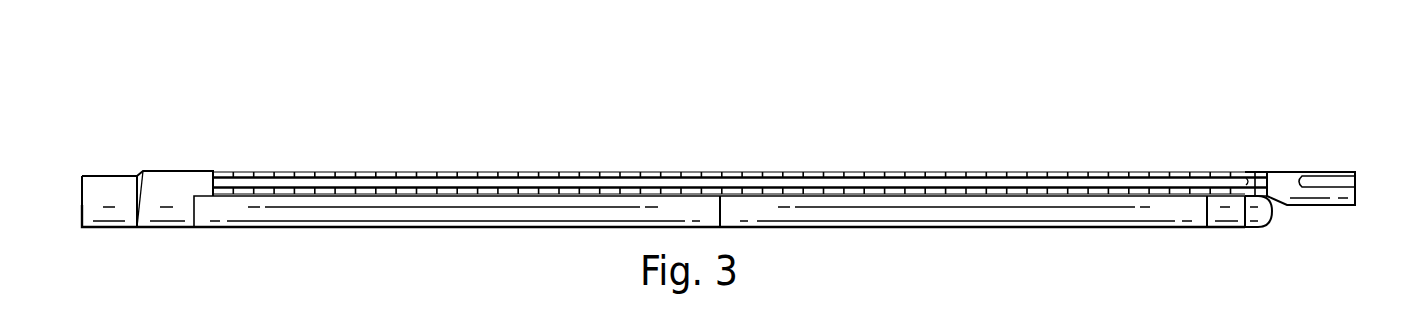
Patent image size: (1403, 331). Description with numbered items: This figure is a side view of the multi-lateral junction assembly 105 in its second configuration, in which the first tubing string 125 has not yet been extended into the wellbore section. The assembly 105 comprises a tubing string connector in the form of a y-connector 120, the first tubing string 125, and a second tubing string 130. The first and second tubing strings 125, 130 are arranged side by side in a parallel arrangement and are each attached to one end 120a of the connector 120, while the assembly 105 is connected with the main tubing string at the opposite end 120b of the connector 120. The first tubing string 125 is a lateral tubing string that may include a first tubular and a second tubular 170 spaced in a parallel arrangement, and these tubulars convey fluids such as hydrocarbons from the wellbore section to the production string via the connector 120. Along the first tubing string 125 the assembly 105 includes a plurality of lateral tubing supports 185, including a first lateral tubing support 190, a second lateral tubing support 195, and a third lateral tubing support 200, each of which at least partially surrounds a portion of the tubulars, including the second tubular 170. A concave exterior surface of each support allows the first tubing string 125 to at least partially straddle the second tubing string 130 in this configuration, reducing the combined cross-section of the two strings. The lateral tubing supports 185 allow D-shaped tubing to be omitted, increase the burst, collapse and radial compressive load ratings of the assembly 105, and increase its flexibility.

The multi-lateral junction assembly 105 is at (878, 86).
The y-connector 120 is at (109, 176).
The end of the connector 120a is at (214, 180).
The end of the connector 120b is at (82, 214).
The first tubing string 125 is at (1285, 172).
The second tubing string 130 is at (308, 228).
The second tubular 170 is at (399, 183).
The plurality of lateral tubing supports 185 is at (654, 160).
The first lateral tubing support 190 is at (531, 171).
The second lateral tubing support 195 is at (557, 171).
The third lateral tubing support 200 is at (577, 171).